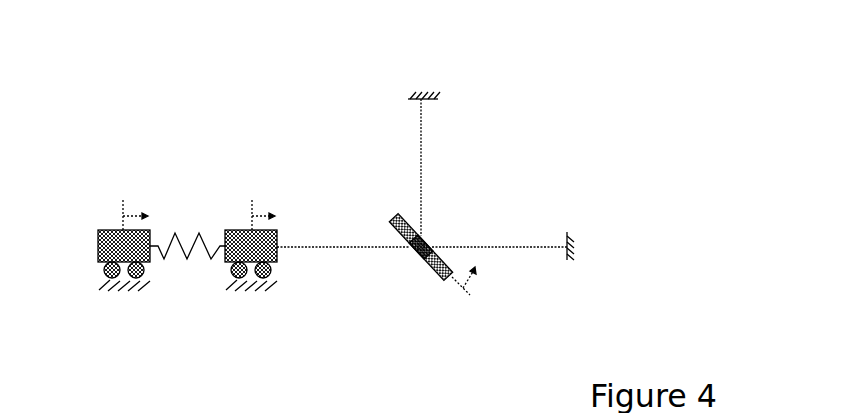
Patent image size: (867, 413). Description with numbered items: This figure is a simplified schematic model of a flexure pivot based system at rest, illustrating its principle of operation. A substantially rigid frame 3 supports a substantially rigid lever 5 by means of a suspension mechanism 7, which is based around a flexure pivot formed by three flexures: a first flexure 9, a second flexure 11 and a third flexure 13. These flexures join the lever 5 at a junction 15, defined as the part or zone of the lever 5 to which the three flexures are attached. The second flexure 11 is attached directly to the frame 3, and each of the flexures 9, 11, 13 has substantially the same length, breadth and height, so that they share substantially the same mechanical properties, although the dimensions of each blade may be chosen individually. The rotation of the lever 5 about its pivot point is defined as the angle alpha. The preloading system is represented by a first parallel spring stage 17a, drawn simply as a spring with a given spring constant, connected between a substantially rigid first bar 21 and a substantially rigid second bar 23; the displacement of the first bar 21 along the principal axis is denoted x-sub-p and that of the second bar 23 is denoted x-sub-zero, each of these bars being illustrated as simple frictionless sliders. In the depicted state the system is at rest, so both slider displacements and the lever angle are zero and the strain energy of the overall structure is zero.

The frame 3 is at (447, 92).
The lever 5 is at (433, 273).
The suspension mechanism 7 is at (378, 178).
The first flexure 9 is at (515, 247).
The second flexure 11 is at (421, 210).
The third flexure 13 is at (358, 247).
The junction 15 is at (412, 260).
The first parallel spring stage 17a is at (205, 253).
The first bar 21 is at (277, 250).
The second bar 23 is at (105, 252).